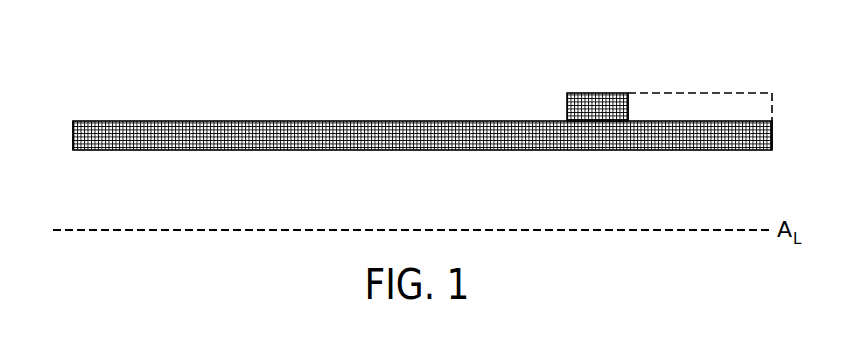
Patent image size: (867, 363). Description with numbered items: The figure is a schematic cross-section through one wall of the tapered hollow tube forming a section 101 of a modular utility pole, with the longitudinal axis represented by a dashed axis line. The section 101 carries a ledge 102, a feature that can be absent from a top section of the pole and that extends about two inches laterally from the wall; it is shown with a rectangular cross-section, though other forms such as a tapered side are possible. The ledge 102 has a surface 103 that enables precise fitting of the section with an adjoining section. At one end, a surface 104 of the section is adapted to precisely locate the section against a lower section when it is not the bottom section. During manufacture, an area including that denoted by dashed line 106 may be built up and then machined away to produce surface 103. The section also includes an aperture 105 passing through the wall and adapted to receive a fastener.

The section 101 is at (278, 121).
The ledge 102 is at (599, 93).
The surface 103 is at (630, 108).
The surface 104 is at (73, 133).
The aperture 105 is at (755, 150).
The dashed line 106 is at (718, 93).